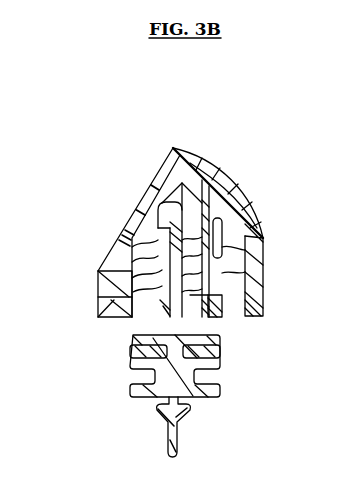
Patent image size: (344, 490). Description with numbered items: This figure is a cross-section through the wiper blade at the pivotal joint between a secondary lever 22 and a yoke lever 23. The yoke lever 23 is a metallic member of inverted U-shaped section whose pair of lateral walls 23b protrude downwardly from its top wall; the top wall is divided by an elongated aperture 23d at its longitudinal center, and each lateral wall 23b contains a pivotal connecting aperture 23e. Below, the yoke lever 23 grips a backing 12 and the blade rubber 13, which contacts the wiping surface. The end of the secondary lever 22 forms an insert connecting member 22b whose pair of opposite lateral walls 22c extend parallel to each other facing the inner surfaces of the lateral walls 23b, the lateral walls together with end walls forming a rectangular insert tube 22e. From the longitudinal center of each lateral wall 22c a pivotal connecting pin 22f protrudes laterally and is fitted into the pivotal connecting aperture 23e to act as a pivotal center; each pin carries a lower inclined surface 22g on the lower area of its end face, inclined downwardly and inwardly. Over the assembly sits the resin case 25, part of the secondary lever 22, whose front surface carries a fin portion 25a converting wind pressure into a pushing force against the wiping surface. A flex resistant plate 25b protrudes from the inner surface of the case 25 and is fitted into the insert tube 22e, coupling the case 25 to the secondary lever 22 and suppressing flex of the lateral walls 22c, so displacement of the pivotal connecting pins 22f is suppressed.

The backing 12 is at (222, 352).
The blade rubber 13 is at (180, 438).
The secondary lever 22 is at (229, 185).
The insert connecting member 22b is at (263, 304).
The lateral wall 22c is at (126, 230).
The insert tube 22e is at (212, 324).
The pivotal connecting pin 22f is at (98, 273).
The lower inclined surface 22g is at (98, 298).
The yoke lever 23 is at (115, 243).
The lateral wall 23b is at (256, 250).
The elongated aperture 23d is at (156, 181).
The pivotal connecting aperture 23e is at (263, 280).
The case 25 is at (173, 148).
The fin portion 25a is at (138, 226).
The flex resistant plate 25b is at (246, 207).